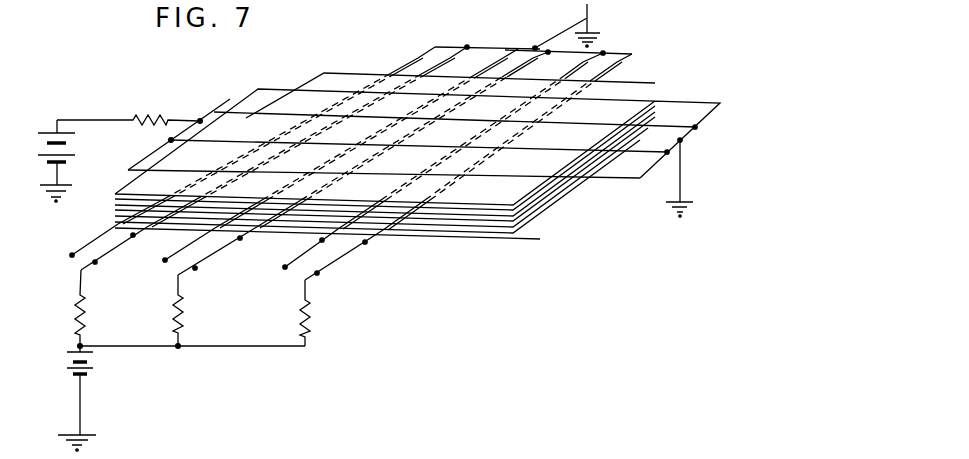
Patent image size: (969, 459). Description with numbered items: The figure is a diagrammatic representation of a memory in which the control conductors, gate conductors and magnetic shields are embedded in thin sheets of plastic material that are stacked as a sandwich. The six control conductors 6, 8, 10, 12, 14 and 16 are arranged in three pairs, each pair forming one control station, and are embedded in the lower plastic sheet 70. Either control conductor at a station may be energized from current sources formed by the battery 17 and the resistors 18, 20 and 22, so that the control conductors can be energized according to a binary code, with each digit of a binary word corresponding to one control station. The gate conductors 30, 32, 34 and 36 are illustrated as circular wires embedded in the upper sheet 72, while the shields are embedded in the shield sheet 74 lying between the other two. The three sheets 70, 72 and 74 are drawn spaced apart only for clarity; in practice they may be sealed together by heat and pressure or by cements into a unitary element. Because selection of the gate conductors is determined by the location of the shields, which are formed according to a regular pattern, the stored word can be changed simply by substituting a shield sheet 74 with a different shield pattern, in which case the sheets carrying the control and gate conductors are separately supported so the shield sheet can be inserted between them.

The control conductor 6 is at (111, 229).
The control conductor 8 is at (146, 239).
The control conductor 10 is at (202, 235).
The control conductor 12 is at (250, 240).
The control conductor 14 is at (322, 240).
The control conductor 16 is at (366, 243).
The battery 17 is at (93, 363).
The resistor 18 is at (87, 312).
The resistor 20 is at (185, 310).
The resistor 22 is at (311, 310).
The gate conductor 30 is at (278, 90).
The gate conductor 32 is at (237, 112).
The gate conductor 34 is at (171, 140).
The gate conductor 36 is at (128, 168).
The lower plastic sheet 70 is at (452, 233).
The upper sheet 72 is at (537, 192).
The shield sheet 74 is at (533, 220).